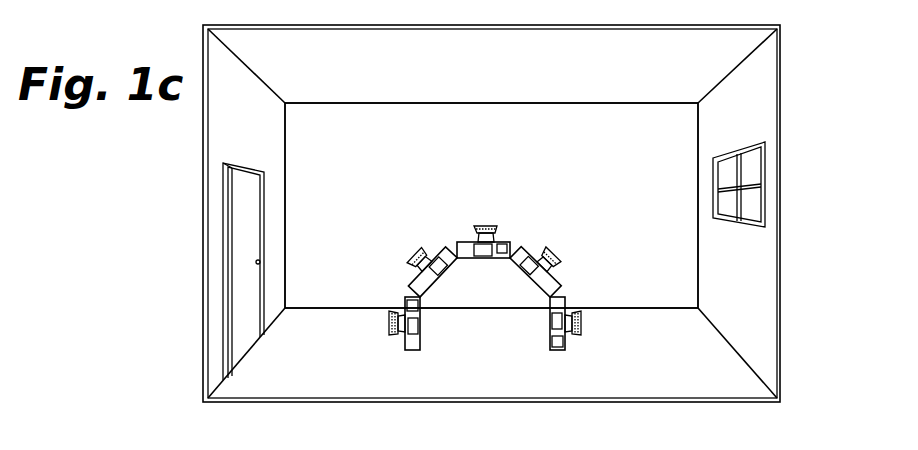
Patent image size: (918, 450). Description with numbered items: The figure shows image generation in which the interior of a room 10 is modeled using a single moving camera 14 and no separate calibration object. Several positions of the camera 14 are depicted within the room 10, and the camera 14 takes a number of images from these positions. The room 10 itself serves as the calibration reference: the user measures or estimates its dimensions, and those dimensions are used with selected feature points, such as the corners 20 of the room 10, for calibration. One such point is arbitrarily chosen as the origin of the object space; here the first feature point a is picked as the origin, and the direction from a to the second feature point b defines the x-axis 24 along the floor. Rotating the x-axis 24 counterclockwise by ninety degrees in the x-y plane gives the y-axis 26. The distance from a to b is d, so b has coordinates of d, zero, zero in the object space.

The room 10 is at (796, 123).
The camera 14 is at (470, 242).
The corner 20 is at (286, 105).
The x-axis 24 is at (272, 318).
The y-axis 26 is at (620, 307).
The first feature point a is at (288, 306).
The second feature point b is at (203, 404).
The distance d is at (311, 313).